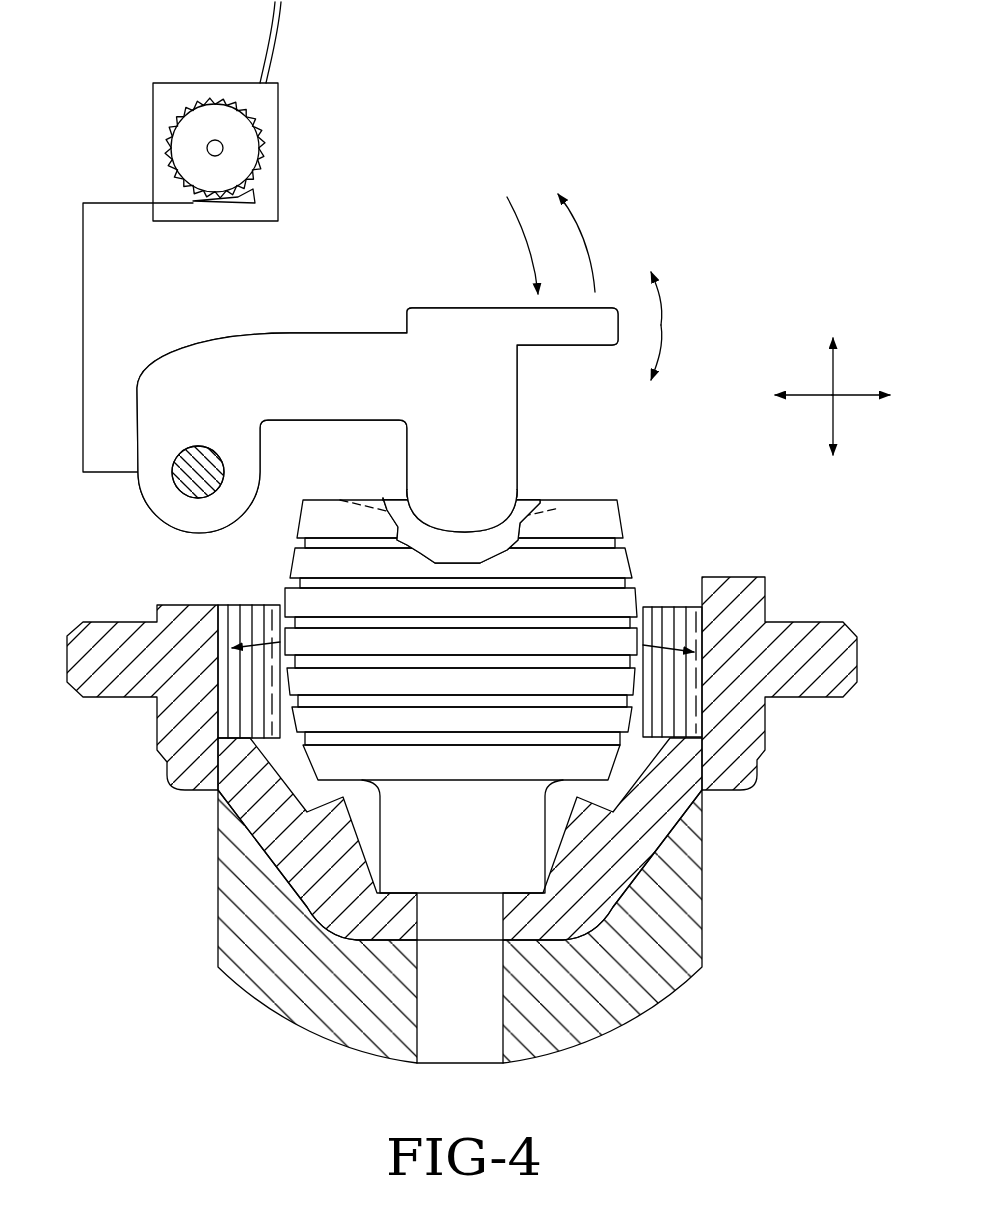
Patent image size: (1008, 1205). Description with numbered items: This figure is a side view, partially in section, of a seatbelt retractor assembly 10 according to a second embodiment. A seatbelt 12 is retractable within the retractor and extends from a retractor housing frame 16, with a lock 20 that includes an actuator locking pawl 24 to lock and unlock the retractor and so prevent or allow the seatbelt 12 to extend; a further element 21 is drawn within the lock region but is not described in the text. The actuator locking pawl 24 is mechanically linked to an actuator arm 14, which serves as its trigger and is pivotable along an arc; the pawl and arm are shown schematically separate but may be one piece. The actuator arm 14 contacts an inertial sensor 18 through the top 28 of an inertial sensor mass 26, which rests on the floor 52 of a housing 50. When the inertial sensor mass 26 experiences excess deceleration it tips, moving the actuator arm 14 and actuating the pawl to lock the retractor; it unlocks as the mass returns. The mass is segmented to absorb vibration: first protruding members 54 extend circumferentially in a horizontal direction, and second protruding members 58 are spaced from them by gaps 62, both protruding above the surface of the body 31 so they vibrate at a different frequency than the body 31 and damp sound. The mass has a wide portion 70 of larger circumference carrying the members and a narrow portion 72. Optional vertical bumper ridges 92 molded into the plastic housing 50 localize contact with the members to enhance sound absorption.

The seatbelt retractor assembly 10 is at (752, 282).
The seatbelt 12 is at (268, 45).
The actuator arm 14 is at (331, 333).
The retractor housing frame 16 is at (190, 83).
The inertial sensor 18 is at (174, 848).
The lock 20 is at (270, 112).
The gear hub 21 is at (190, 145).
The actuator locking pawl 24 is at (207, 204).
The inertial sensor mass 26 is at (599, 516).
The top of inertial sensor mass 28 is at (527, 507).
The body of the inertial mass 31 is at (397, 508).
The housing 50 is at (766, 604).
The floor 52 is at (515, 895).
The first protruding member 54 is at (307, 567).
The second protruding member 58 is at (318, 605).
The gap 62 is at (300, 562).
The wide portion 70 is at (640, 694).
The narrow portion 72 is at (548, 848).
The vertical bumper ridges 92 is at (672, 607).